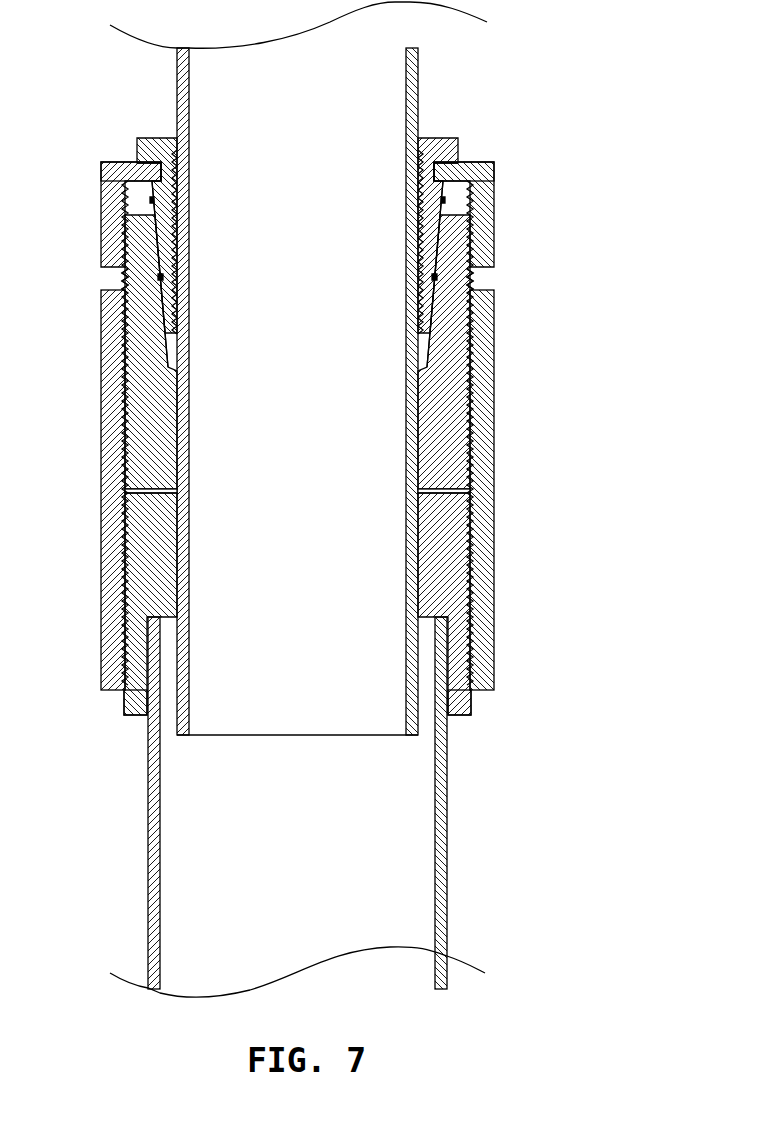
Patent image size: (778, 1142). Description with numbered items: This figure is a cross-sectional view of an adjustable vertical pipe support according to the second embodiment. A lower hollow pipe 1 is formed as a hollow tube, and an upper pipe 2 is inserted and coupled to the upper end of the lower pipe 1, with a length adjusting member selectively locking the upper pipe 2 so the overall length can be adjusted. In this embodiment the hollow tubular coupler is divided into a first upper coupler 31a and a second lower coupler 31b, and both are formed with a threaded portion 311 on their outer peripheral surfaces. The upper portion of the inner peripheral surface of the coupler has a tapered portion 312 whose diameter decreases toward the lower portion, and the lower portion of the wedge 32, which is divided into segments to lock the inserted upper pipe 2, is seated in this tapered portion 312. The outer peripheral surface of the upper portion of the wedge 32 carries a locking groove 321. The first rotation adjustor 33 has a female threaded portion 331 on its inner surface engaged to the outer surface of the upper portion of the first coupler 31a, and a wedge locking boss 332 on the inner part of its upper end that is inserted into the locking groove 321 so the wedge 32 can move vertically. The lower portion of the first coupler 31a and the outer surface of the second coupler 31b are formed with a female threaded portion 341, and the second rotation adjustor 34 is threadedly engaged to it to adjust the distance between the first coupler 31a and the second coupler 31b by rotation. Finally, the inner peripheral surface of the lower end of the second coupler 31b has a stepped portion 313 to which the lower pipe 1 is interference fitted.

The lower hollow pipe 1 is at (447, 780).
The upper pipe 2 is at (420, 64).
The wedge 32 is at (460, 143).
The locking groove 321 is at (180, 144).
The first rotation adjustor 33 is at (497, 210).
The female threaded portion 331 is at (122, 178).
The wedge locking boss 332 is at (140, 165).
The second rotation adjustor 34 is at (496, 494).
The female threaded portion 341 is at (124, 400).
The first upper coupler 31a is at (483, 283).
The second lower coupler 31b is at (477, 705).
The threaded portion 311 is at (124, 284).
The tapered portion 312 is at (172, 342).
The stepped portion 313 is at (135, 602).